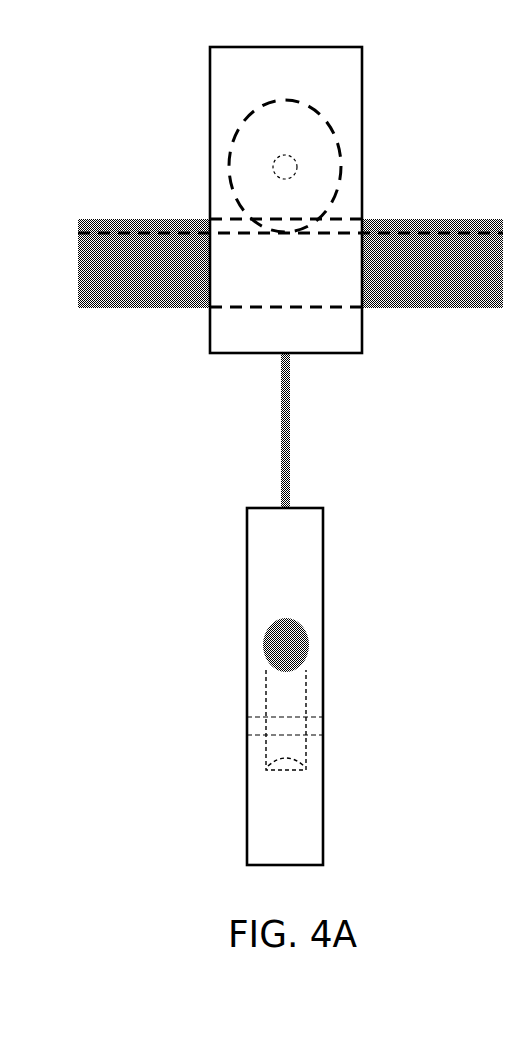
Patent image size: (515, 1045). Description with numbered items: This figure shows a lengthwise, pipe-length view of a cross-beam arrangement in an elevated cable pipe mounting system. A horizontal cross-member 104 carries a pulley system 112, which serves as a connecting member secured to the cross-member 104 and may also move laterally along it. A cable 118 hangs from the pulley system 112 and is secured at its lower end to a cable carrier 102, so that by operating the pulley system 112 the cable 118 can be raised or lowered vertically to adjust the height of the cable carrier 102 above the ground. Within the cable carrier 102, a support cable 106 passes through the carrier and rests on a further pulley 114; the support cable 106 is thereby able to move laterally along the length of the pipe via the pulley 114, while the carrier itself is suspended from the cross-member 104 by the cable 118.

The cable carrier 102 is at (323, 555).
The cross-member 104 is at (112, 308).
The support cable 106 is at (332, 654).
The pulley system 112 is at (210, 140).
The pulley 114 is at (327, 758).
The cable 118 is at (298, 424).